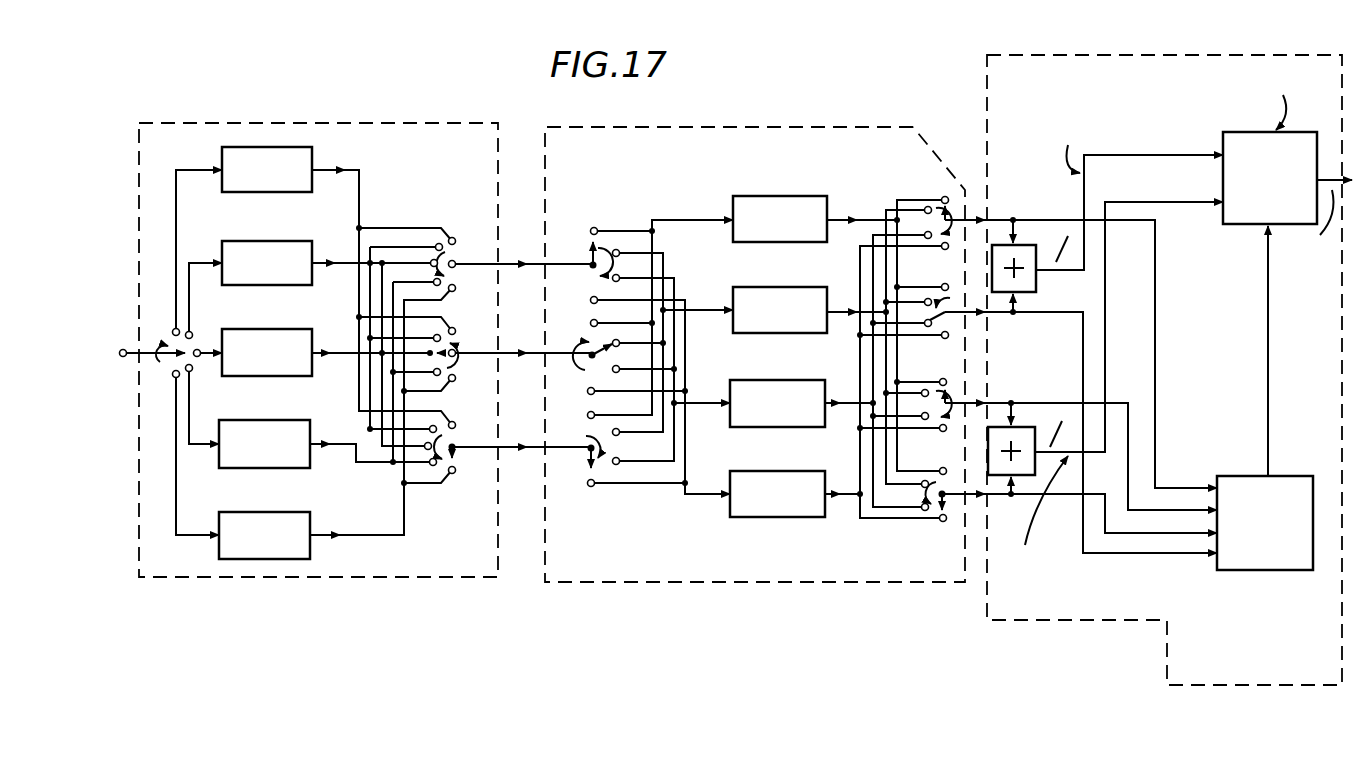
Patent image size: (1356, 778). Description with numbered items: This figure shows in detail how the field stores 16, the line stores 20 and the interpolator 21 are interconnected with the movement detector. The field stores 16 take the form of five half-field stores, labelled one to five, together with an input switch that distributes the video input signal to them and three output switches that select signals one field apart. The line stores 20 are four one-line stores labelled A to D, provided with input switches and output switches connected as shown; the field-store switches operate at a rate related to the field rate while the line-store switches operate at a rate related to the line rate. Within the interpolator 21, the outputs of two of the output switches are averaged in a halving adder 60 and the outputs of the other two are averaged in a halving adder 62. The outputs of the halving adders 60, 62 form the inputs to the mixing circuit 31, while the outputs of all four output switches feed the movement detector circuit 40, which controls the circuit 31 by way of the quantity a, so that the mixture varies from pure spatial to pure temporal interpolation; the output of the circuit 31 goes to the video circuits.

The field stores 16 is at (470, 586).
The line stores 20 is at (886, 590).
The interpolator 21 is at (1165, 371).
The circuit 31 is at (1225, 228).
The circuit 40 is at (1238, 476).
The halving adder 60 is at (1040, 288).
The halving adder 62 is at (1021, 428).
The quantity a is at (1270, 368).